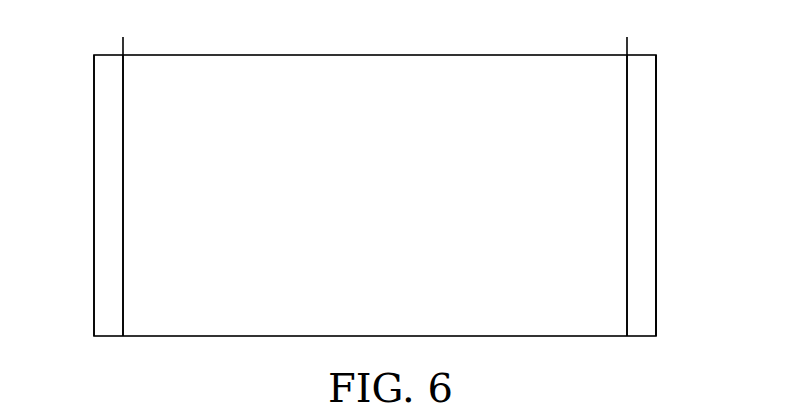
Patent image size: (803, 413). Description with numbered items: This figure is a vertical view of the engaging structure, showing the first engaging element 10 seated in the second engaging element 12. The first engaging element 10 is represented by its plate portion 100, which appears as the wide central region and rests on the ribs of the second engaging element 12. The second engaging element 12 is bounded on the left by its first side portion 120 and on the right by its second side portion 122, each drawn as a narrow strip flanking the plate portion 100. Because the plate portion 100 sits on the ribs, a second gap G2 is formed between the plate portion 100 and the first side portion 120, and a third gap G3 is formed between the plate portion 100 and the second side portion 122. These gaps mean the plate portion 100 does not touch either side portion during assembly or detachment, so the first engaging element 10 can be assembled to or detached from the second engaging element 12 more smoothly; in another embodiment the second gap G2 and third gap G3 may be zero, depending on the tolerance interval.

The first engaging element 10 is at (362, 55).
The second engaging element 12 is at (656, 152).
The plate portion 100 is at (260, 70).
The first side portion 120 is at (94, 243).
The second side portion 122 is at (656, 231).
The second gap G2 is at (96, 43).
The third gap G3 is at (657, 43).